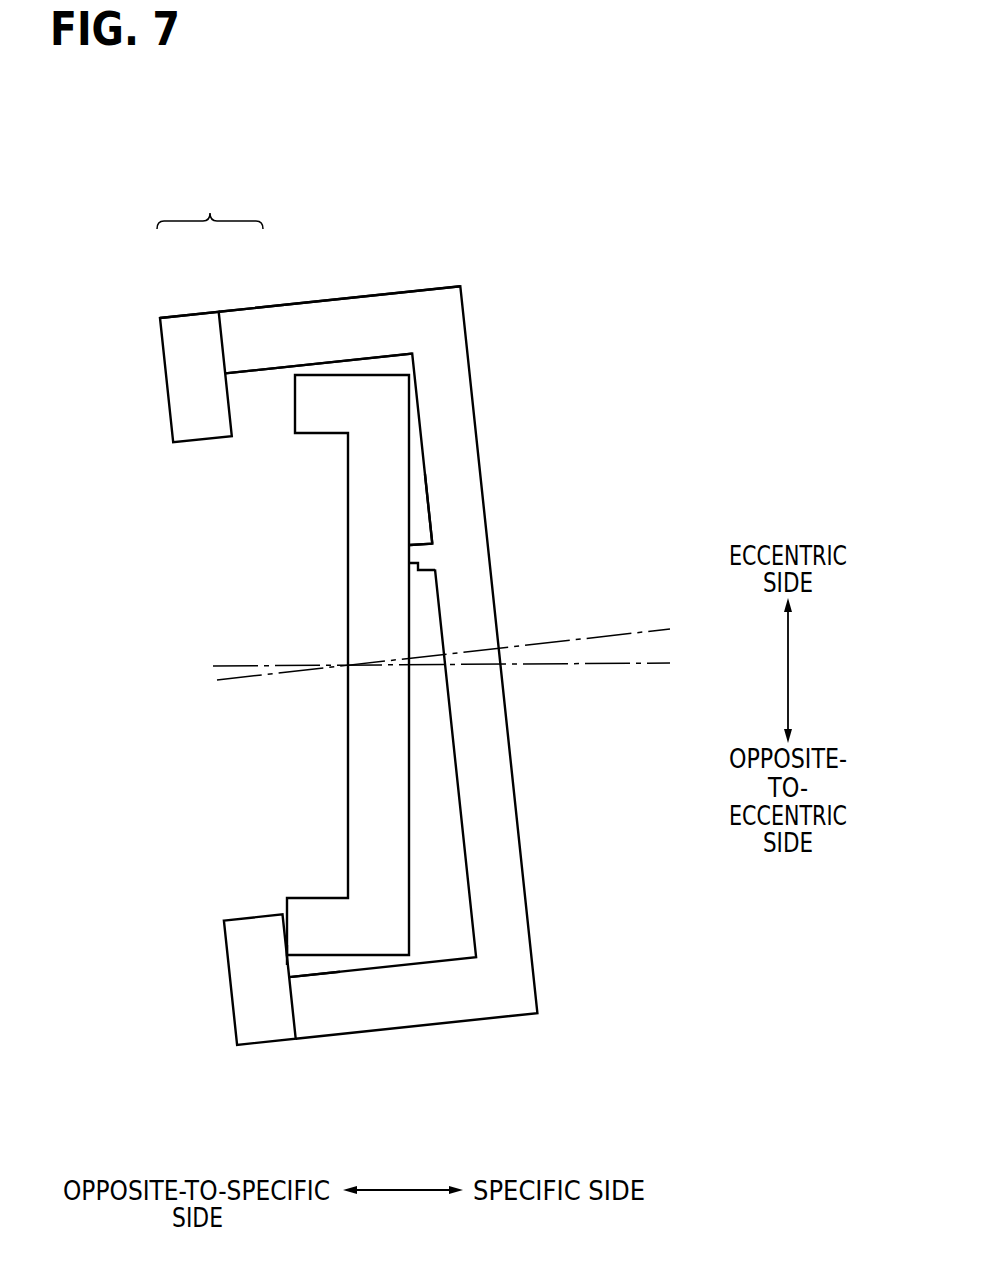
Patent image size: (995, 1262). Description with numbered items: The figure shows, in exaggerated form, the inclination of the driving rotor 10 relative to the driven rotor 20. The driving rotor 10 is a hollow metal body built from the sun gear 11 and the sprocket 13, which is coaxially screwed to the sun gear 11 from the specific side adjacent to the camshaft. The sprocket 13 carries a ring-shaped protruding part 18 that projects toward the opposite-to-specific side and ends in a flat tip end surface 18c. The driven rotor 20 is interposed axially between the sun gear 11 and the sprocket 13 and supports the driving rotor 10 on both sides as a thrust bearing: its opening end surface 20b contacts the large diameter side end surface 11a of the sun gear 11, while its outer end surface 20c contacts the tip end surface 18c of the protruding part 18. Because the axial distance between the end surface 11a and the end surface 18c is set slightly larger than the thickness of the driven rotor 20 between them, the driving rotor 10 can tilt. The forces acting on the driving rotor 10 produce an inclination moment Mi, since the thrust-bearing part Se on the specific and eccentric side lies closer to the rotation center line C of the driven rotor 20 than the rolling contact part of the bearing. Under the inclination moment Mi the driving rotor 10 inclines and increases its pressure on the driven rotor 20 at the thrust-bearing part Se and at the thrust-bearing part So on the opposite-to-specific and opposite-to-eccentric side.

The driving rotor 10 is at (210, 206).
The sun gear 11 is at (190, 320).
The large diameter side end surface 11a is at (287, 928).
The sprocket 13 is at (256, 318).
The protruding part 18 is at (428, 581).
The tip end surface 18c is at (412, 562).
The driven rotor 20 is at (392, 792).
The opening end surface 20b is at (287, 905).
The outer end surface 20c is at (413, 517).
The thrust-bearing part Se is at (417, 536).
The thrust-bearing part So is at (277, 963).
The inclination moment Mi is at (481, 204).
The rotation center line C is at (622, 668).